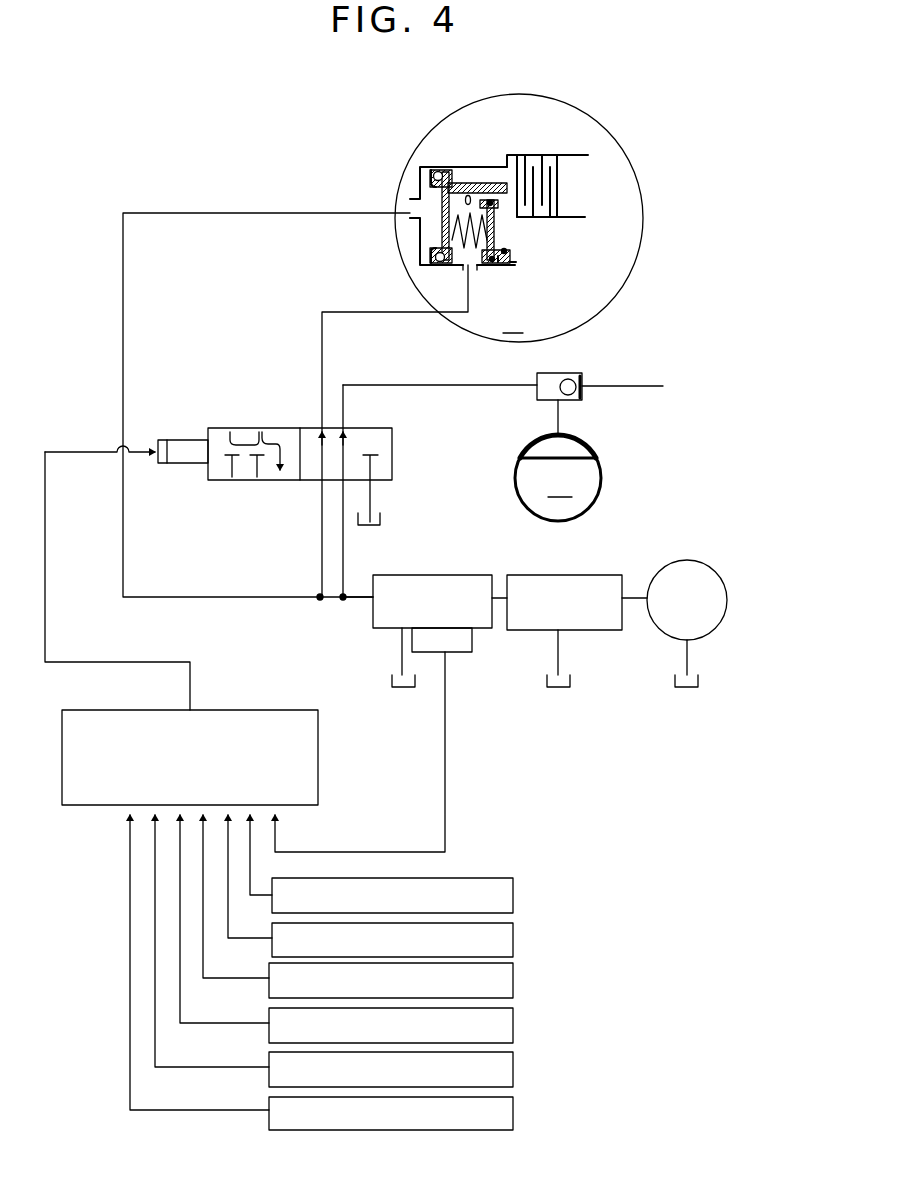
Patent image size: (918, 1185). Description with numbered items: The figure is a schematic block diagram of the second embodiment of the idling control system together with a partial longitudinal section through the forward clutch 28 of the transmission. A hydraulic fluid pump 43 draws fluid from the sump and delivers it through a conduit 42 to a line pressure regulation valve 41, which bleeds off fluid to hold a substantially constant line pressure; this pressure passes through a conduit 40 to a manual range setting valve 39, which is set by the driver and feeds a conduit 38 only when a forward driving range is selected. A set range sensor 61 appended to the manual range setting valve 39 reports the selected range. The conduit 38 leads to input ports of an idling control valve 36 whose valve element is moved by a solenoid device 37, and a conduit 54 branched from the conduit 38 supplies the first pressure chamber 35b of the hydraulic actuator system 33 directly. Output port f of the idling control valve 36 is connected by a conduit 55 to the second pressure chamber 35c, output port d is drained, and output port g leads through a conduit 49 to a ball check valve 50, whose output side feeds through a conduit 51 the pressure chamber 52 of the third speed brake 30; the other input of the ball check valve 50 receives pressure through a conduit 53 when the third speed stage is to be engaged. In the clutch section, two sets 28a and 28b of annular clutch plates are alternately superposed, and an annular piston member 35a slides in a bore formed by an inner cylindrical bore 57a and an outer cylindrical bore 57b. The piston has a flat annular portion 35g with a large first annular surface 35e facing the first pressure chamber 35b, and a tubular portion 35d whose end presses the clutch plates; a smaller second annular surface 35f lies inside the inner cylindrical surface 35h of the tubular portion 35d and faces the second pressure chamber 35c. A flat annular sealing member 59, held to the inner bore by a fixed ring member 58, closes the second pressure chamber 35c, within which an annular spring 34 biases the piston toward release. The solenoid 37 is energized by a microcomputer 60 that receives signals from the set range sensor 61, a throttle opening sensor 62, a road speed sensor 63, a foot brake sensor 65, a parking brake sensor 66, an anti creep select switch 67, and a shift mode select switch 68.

The forward clutch C1 28 is at (612, 127).
The clutch plates 28a is at (559, 165).
The clutch plates 28b is at (560, 204).
The third speed brake B1 30 is at (602, 492).
The hydraulic actuator system 33 is at (423, 158).
The annular spring 34 is at (497, 246).
The annular piston member 35a is at (430, 171).
The first pressure chamber 35b is at (435, 253).
The second pressure chamber 35c is at (479, 258).
The tubular portion 35d is at (486, 184).
The first annular surface 35e is at (441, 205).
The second annular surface 35f is at (457, 266).
The flat annular portion 35g is at (424, 222).
The inner cylindrical surface 35h is at (469, 195).
The idling control valve 36 is at (397, 449).
The solenoid device 37 is at (181, 440).
The conduit 38 is at (352, 597).
The manual range setting valve 39 is at (433, 575).
The conduit 40 is at (500, 594).
The line pressure regulation valve 41 is at (562, 575).
The conduit 42 is at (630, 597).
The hydraulic fluid pump 43 is at (708, 573).
The conduit 49 is at (452, 384).
The ball check valve 50 is at (577, 375).
The conduit 51 is at (557, 420).
The pressure chamber 52 is at (589, 438).
The conduit 53 is at (643, 385).
The conduit 54 is at (125, 356).
The conduit 55 is at (320, 358).
The inner cylindrical bore 57a is at (425, 258).
The outer cylindrical bore 57b is at (428, 176).
The fixed ring member 58 is at (513, 263).
The sealing member 59 is at (498, 218).
The microcomputer 60 is at (283, 710).
The set range sensor 61 is at (457, 654).
The throttle opening sensor 62 is at (513, 896).
The road speed sensor 63 is at (513, 940).
The foot brake sensor 65 is at (513, 980).
The parking brake sensor 66 is at (513, 1025).
The anti creep select switch 67 is at (513, 1070).
The shift mode select switch 68 is at (513, 1112).